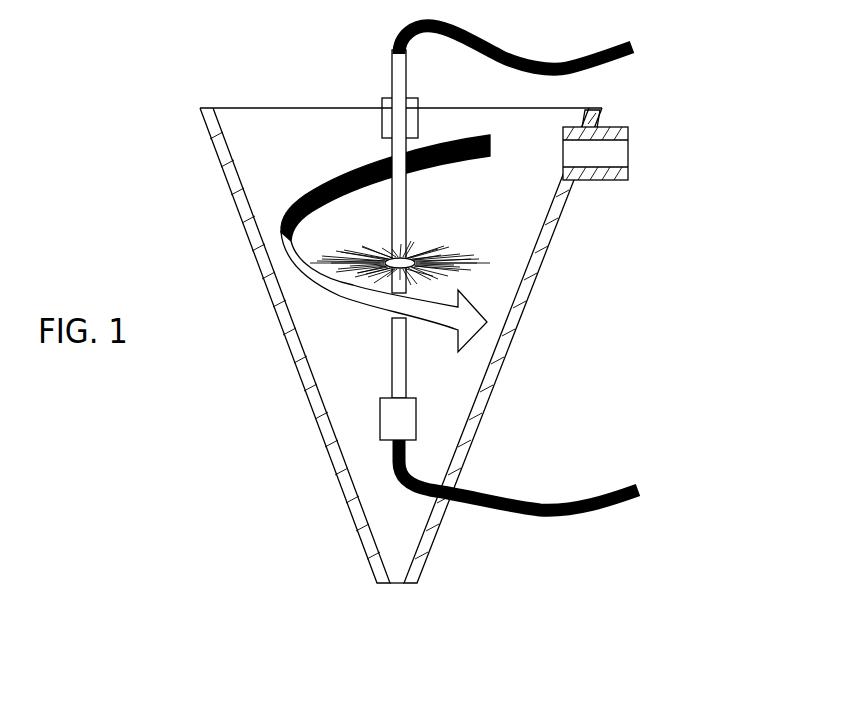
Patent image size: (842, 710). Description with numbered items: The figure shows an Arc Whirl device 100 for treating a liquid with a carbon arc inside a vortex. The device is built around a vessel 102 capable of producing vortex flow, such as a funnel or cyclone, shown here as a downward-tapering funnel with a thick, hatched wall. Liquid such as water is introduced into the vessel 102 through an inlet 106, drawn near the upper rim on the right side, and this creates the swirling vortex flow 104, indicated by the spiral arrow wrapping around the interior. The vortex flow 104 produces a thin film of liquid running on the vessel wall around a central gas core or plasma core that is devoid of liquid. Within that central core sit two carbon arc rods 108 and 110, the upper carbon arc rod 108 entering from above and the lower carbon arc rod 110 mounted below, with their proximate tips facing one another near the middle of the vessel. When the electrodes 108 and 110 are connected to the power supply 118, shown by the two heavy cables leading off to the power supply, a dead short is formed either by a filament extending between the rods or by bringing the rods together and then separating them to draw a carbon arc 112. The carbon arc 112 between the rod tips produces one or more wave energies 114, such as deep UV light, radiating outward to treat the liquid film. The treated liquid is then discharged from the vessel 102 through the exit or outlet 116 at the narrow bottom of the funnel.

The Arc Whirl device 100 is at (648, 103).
The vessel 102 is at (480, 420).
The vortex flow 104 is at (476, 318).
The inlet 106 is at (628, 172).
The carbon arc rod 108 is at (392, 68).
The carbon arc rod 110 is at (397, 372).
The carbon arc 112 is at (415, 255).
The wave energies 114 is at (470, 263).
The outlet 116 is at (398, 585).
The power supply 118 is at (573, 259).